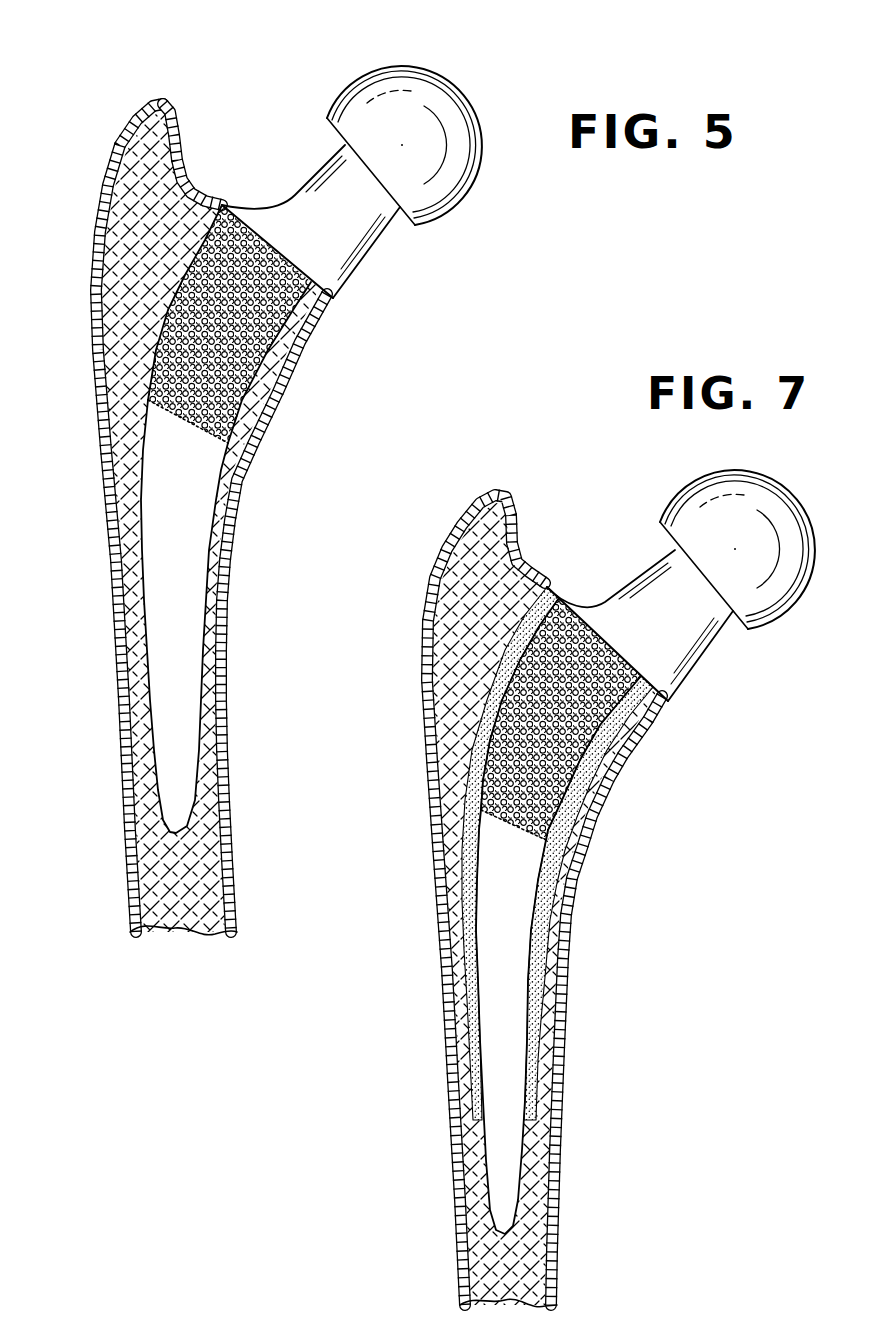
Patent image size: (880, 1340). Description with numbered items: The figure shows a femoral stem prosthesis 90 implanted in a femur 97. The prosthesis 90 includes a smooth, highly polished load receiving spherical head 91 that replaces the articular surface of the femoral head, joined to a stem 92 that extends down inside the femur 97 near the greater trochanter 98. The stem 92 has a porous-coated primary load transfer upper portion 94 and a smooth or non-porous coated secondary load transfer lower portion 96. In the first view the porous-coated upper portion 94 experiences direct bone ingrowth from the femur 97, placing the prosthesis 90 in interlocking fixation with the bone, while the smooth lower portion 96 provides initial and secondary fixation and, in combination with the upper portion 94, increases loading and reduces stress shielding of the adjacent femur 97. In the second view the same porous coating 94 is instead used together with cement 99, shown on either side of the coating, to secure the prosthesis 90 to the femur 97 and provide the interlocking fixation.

In FIG. 5, the femoral stem prosthesis 90 is at (311, 418).
In FIG. 7, the femoral stem prosthesis 90 is at (658, 827).
In FIG. 5, the spherical head 91 is at (443, 68).
In FIG. 7, the spherical head 91 is at (804, 492).
In FIG. 5, the stem 92 is at (273, 519).
In FIG. 7, the stem 92 is at (588, 910).
In FIG. 5, the porous-coated primary load transfer upper portion 94 is at (270, 342).
In FIG. 7, the porous-coated primary load transfer upper portion 94 is at (597, 745).
In FIG. 5, the smooth secondary load transfer lower portion 96 is at (203, 672).
In FIG. 7, the smooth secondary load transfer lower portion 96 is at (530, 1098).
In FIG. 5, the femur 97 is at (100, 182).
In FIG. 7, the femur 97 is at (426, 590).
In FIG. 5, the greater trochanter 98 is at (203, 190).
In FIG. 7, the cement 99 is at (503, 678).